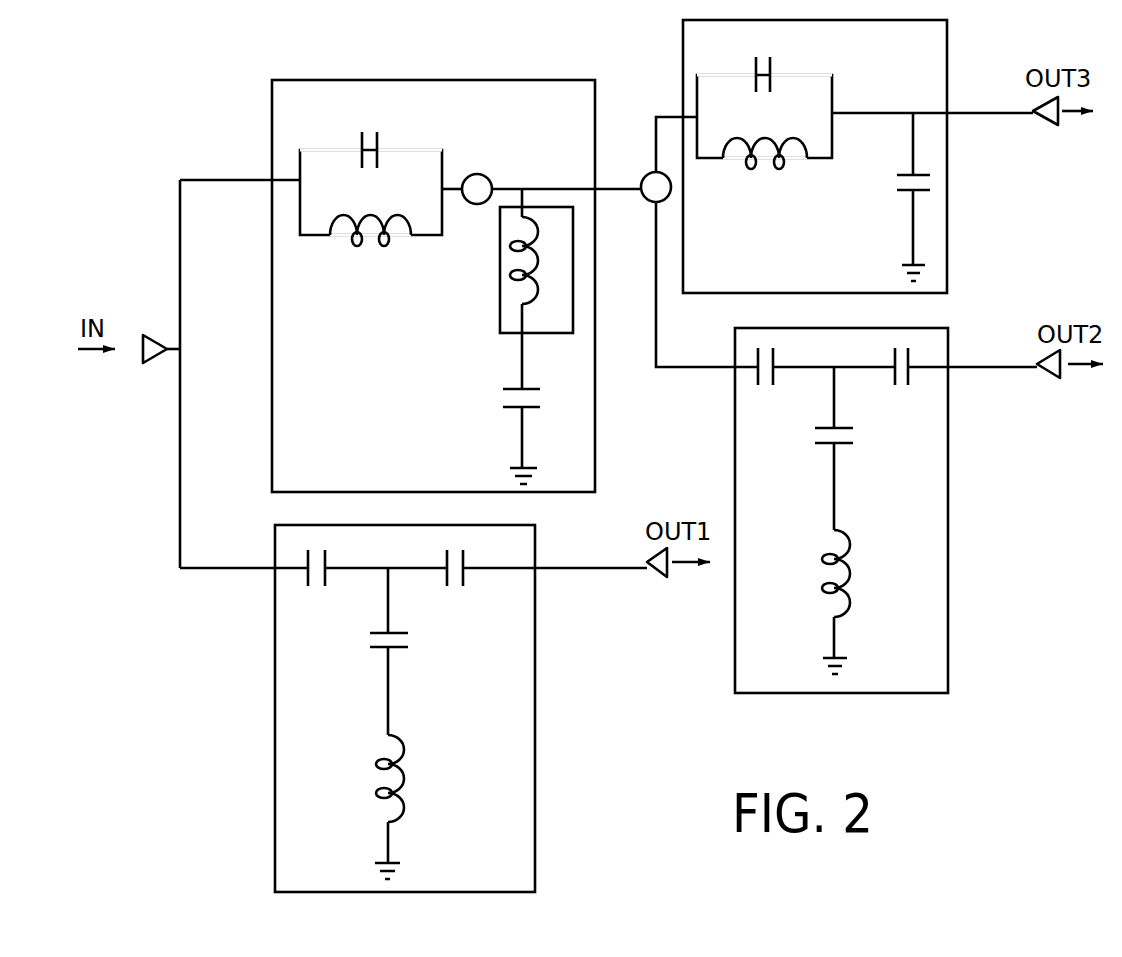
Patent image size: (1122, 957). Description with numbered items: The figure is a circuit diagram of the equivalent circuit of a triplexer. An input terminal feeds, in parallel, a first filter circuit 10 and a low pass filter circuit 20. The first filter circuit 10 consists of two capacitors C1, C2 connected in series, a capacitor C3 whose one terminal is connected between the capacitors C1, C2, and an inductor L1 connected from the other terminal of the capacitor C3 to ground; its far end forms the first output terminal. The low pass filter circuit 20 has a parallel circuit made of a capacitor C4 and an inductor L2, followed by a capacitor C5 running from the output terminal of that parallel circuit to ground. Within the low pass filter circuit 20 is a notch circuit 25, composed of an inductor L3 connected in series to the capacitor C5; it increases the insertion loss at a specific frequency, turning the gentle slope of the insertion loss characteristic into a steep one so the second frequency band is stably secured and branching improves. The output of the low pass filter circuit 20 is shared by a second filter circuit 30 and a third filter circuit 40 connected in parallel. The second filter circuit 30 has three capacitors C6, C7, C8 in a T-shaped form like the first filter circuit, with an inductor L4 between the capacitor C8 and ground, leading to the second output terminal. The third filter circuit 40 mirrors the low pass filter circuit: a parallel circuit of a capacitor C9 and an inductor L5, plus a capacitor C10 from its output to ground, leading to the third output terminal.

The first filter circuit 10 is at (275, 683).
The low pass filter circuit 20 is at (272, 122).
The notch circuit 25 is at (499, 325).
The second filter circuit 30 is at (948, 573).
The third filter circuit 40 is at (947, 233).
The capacitor C1 is at (316, 587).
The capacitor C2 is at (456, 585).
The capacitor C3 is at (408, 640).
The capacitor C4 is at (371, 134).
The capacitor C5 is at (542, 402).
The capacitor C6 is at (771, 383).
The capacitor C7 is at (901, 382).
The capacitor C8 is at (857, 437).
The capacitor C9 is at (764, 59).
The capacitor C10 is at (885, 189).
The inductor L1 is at (415, 778).
The inductor L2 is at (370, 249).
The inductor L3 is at (540, 260).
The inductor L4 is at (860, 573).
The inductor L5 is at (765, 172).